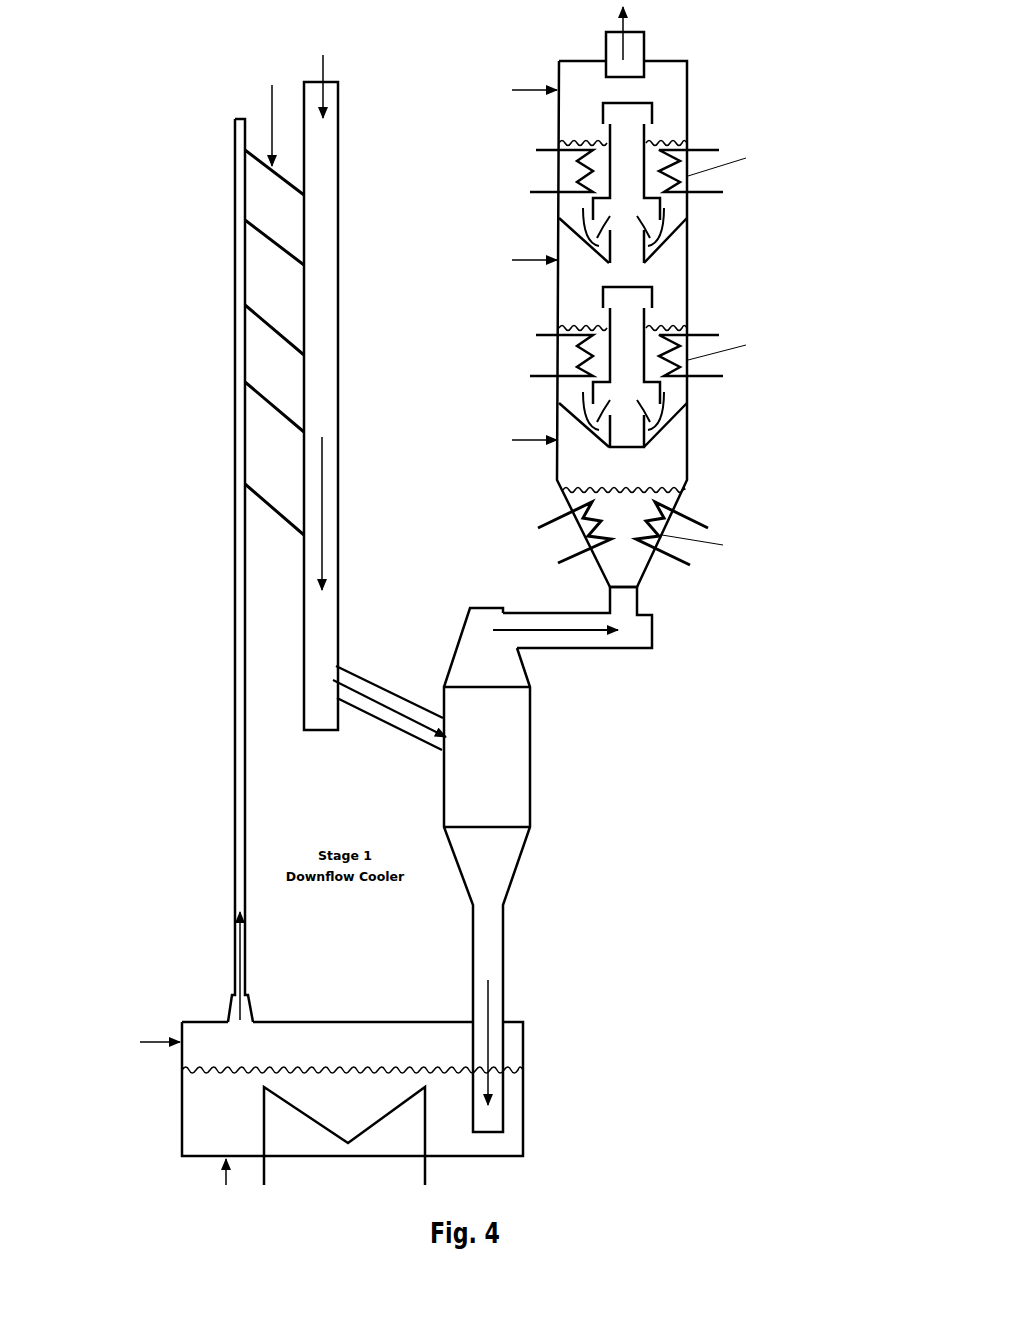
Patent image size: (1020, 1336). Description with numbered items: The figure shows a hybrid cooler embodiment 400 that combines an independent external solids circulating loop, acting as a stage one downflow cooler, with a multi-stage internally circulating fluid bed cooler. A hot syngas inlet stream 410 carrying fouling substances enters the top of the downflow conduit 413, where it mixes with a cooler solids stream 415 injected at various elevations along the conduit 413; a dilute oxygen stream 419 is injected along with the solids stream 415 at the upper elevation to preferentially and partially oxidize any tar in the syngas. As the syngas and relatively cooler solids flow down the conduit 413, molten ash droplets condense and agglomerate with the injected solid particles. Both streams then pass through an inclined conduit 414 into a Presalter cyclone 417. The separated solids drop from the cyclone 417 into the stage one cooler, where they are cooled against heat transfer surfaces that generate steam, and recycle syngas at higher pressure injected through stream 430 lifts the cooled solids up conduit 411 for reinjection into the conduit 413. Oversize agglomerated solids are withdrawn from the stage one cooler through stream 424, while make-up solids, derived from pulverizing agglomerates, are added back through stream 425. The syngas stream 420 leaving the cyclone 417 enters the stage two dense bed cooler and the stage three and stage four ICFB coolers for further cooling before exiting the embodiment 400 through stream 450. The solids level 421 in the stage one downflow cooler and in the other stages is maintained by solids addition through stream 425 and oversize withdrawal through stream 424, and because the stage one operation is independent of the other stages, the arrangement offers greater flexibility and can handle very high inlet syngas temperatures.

The hybrid cooler embodiment 400 is at (218, 600).
The hot syngas inlet stream 410 is at (325, 78).
The conduit 411 is at (233, 439).
The conduit 413 is at (338, 215).
The inclined conduit 414 is at (397, 728).
The cooler solids stream 415 is at (283, 182).
The Presalter cyclone 417 is at (443, 687).
The dilute oxygen stream 419 is at (257, 118).
The syngas stream 420 is at (567, 650).
The solids level 421 is at (597, 142).
The oversize solids withdrawal stream 424 is at (185, 1128).
The make-up solids stream 425 is at (332, 566).
The recycle syngas stream 430 is at (228, 1180).
The syngas outlet stream 450 is at (630, 41).